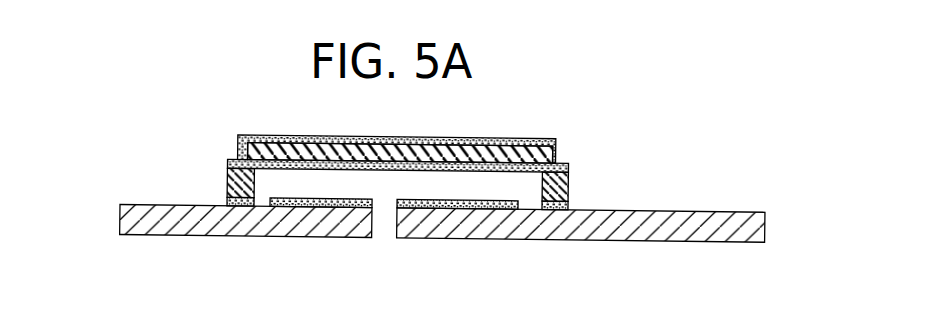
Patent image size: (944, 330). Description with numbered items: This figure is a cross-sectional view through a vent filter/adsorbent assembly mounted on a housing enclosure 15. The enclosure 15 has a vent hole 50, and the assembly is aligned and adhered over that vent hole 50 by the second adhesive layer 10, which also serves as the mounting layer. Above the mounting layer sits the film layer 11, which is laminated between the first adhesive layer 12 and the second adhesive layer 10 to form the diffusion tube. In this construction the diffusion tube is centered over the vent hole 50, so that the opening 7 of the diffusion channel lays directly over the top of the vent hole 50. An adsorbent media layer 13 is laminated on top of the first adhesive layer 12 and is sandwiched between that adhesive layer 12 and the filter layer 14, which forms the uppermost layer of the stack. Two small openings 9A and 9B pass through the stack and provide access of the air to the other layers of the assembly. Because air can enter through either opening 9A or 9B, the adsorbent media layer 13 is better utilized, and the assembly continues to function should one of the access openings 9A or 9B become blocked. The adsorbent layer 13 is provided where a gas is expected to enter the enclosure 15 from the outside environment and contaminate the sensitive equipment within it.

The opening 7 is at (383, 235).
The vent hole 50 is at (388, 234).
The access opening 9A is at (263, 170).
The access opening 9B is at (528, 172).
The second adhesive layer 10 is at (453, 195).
The film layer 11 is at (570, 185).
The first adhesive layer 12 is at (570, 168).
The adsorbent media layer 13 is at (557, 153).
The filter layer 14 is at (556, 138).
The housing enclosure 15 is at (726, 219).